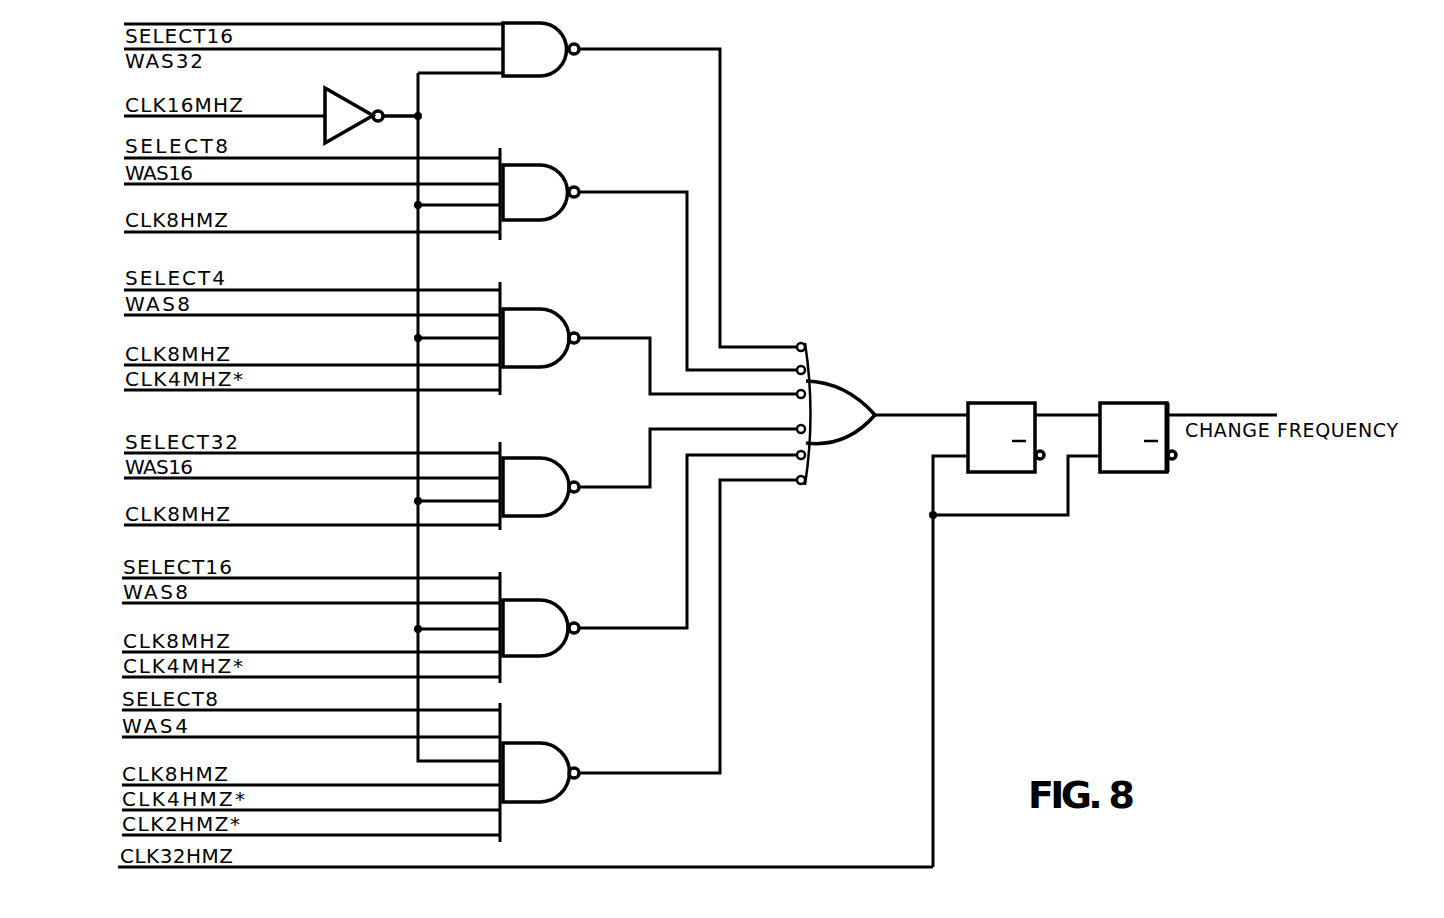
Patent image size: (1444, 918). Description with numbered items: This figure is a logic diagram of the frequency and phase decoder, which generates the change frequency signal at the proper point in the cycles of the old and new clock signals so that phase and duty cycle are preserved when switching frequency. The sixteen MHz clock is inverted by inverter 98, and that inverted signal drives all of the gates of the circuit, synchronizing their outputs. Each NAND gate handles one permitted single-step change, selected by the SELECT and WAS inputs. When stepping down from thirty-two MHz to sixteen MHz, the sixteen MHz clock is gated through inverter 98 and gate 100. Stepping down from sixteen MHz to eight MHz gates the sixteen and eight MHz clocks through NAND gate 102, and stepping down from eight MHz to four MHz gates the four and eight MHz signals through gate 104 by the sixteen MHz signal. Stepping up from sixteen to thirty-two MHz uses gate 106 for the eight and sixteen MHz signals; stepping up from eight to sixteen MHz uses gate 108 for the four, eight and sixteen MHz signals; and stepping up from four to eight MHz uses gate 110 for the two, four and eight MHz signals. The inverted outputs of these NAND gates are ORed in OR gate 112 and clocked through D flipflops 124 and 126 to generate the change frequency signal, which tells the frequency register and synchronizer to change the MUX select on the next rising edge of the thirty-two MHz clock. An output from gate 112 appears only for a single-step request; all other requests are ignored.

The inverter 98 is at (340, 98).
The gate 100 is at (549, 77).
The NAND gate 102 is at (549, 221).
The gate 104 is at (549, 368).
The gate 106 is at (549, 517).
The gate 108 is at (549, 656).
The gate 110 is at (549, 802).
The OR gate 112 is at (852, 383).
The D flipflop 124 is at (1007, 403).
The D flipflop 126 is at (1125, 403).